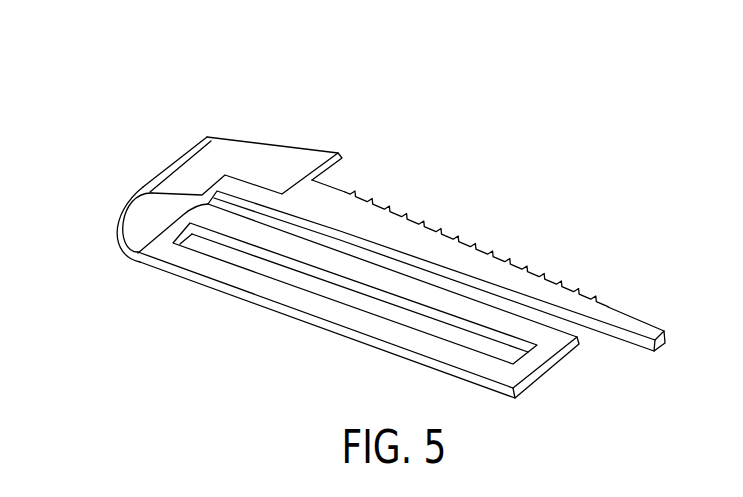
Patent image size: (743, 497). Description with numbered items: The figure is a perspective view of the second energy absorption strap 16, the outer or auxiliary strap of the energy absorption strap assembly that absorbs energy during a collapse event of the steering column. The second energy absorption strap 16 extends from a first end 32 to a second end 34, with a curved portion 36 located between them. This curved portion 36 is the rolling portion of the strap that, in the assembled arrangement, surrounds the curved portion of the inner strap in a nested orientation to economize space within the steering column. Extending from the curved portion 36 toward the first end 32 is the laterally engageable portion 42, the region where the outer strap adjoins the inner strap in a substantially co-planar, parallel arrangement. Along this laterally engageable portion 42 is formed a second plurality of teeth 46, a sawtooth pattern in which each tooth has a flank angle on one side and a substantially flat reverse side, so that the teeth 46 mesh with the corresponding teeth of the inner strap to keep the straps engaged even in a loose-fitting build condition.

The second energy absorption strap 16 is at (284, 156).
The first end 32 is at (666, 343).
The second end 34 is at (546, 364).
The curved portion 36 is at (122, 216).
The laterally engageable portion 42 is at (431, 227).
The second plurality of teeth 46 is at (476, 234).